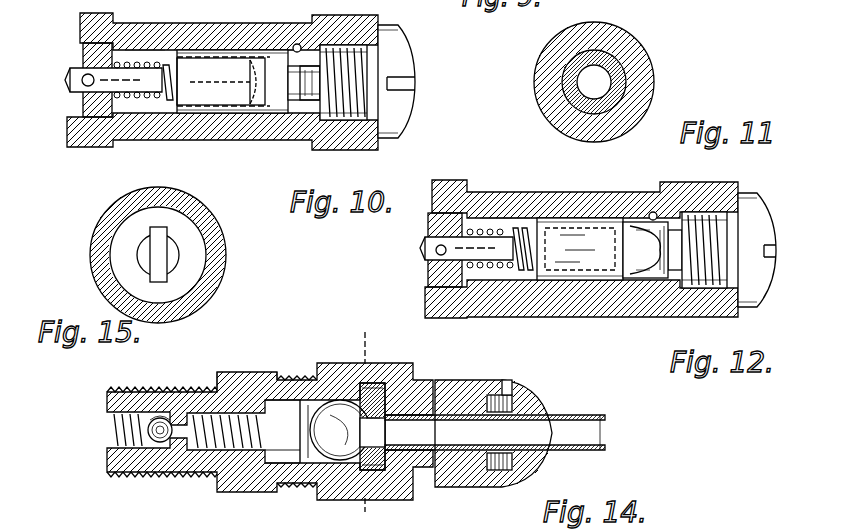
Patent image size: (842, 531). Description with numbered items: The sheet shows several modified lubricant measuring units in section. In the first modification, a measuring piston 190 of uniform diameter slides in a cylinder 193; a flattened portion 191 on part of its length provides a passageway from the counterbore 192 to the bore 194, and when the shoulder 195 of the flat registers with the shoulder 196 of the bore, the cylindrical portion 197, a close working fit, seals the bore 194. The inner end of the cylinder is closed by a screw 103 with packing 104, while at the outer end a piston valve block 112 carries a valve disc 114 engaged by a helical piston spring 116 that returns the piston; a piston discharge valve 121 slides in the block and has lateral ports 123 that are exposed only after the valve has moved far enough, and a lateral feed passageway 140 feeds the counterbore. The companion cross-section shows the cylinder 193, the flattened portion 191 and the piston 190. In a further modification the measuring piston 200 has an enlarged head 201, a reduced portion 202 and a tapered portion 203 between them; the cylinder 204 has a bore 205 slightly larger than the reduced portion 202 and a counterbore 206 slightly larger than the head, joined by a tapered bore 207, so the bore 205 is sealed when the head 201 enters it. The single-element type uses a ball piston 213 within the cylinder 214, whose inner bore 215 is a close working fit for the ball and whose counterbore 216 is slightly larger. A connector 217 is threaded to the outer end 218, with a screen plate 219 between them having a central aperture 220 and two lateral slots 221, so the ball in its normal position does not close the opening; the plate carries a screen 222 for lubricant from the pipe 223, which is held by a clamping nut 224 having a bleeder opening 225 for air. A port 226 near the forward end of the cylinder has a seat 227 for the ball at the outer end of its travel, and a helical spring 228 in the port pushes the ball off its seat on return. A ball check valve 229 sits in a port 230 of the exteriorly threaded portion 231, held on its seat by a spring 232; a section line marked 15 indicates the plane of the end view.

In FIG. 14, the section line 15 is at (362, 421).
In FIG. 10, the screw 103 is at (360, 62).
In FIG. 12, the screw 103 is at (717, 228).
In FIG. 10, the packing 104 is at (404, 126).
In FIG. 12, the packing 104 is at (764, 294).
In FIG. 10, the piston valve block 112 is at (88, 56).
In FIG. 12, the piston valve block 112 is at (432, 216).
In FIG. 10, the valve disc 114 is at (115, 102).
In FIG. 12, the valve disc 114 is at (430, 280).
In FIG. 10, the helical piston spring 116 is at (166, 104).
In FIG. 12, the helical piston spring 116 is at (516, 270).
In FIG. 10, the piston discharge valve 121 is at (72, 82).
In FIG. 12, the piston discharge valve 121 is at (428, 248).
In FIG. 10, the lateral ports 123 is at (84, 76).
In FIG. 12, the lateral ports 123 is at (434, 256).
In FIG. 10, the lateral feed passageway 140 is at (294, 96).
In FIG. 12, the lateral feed passageway 140 is at (700, 200).
In FIG. 10, the measuring piston 190 is at (206, 114).
In FIG. 11, the measuring piston 190 is at (621, 92).
In FIG. 10, the flattened portion 191 is at (233, 60).
In FIG. 11, the flattened portion 191 is at (598, 54).
In FIG. 10, the counterbore 192 is at (300, 44).
In FIG. 10, the cylinder 193 is at (193, 32).
In FIG. 11, the cylinder 193 is at (630, 45).
In FIG. 10, the bore 194 is at (143, 48).
In FIG. 10, the shoulder 195 is at (276, 44).
In FIG. 10, the shoulder 196 is at (252, 115).
In FIG. 10, the cylindrical portion 197 is at (296, 102).
In FIG. 12, the measuring piston 200 is at (538, 272).
In FIG. 12, the enlarged head 201 is at (660, 268).
In FIG. 12, the reduced portion 202 is at (600, 260).
In FIG. 12, the tapered portion 203 is at (625, 282).
In FIG. 12, the cylinder 204 is at (560, 200).
In FIG. 12, the bore 205 is at (497, 218).
In FIG. 12, the counterbore 206 is at (651, 212).
In FIG. 12, the tapered bore 207 is at (632, 214).
In FIG. 14, the ball piston 213 is at (322, 400).
In FIG. 14, the cylinder 214 is at (270, 362).
In FIG. 14, the bore 215 is at (285, 380).
In FIG. 14, the counterbore 216 is at (326, 376).
In FIG. 15, the connector 217 is at (112, 222).
In FIG. 14, the connector 217 is at (388, 384).
In FIG. 14, the outer end 218 is at (368, 478).
In FIG. 15, the screen plate 219 is at (192, 232).
In FIG. 14, the screen plate 219 is at (374, 390).
In FIG. 15, the central aperture 220 is at (168, 254).
In FIG. 14, the central aperture 220 is at (376, 410).
In FIG. 15, the lateral slots 221 is at (160, 230).
In FIG. 14, the lateral slots 221 is at (364, 388).
In FIG. 14, the screen 222 is at (400, 440).
In FIG. 14, the pipe 223 is at (597, 417).
In FIG. 14, the clamping nut 224 is at (540, 405).
In FIG. 14, the bleeder opening 225 is at (506, 386).
In FIG. 14, the port 226 is at (200, 413).
In FIG. 14, the seat 227 is at (270, 450).
In FIG. 14, the helical spring 228 is at (318, 420).
In FIG. 14, the ball check valve 229 is at (156, 418).
In FIG. 14, the port 230 is at (154, 446).
In FIG. 14, the portion 231 is at (120, 466).
In FIG. 14, the spring 232 is at (118, 432).